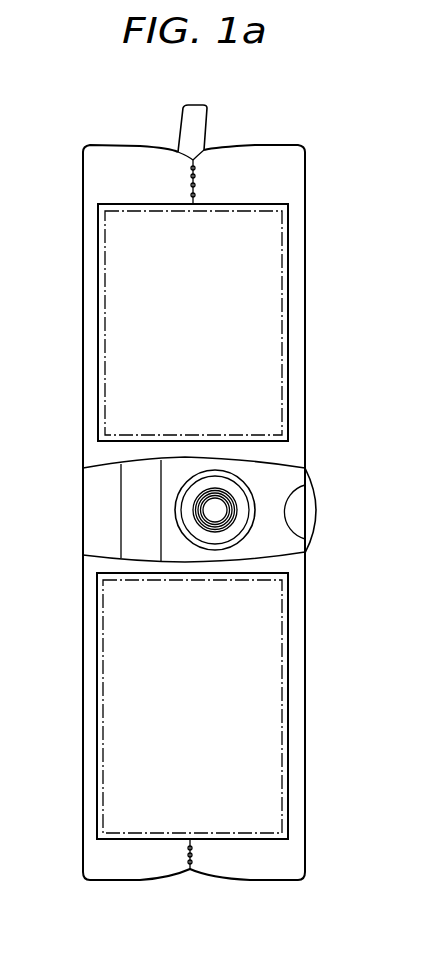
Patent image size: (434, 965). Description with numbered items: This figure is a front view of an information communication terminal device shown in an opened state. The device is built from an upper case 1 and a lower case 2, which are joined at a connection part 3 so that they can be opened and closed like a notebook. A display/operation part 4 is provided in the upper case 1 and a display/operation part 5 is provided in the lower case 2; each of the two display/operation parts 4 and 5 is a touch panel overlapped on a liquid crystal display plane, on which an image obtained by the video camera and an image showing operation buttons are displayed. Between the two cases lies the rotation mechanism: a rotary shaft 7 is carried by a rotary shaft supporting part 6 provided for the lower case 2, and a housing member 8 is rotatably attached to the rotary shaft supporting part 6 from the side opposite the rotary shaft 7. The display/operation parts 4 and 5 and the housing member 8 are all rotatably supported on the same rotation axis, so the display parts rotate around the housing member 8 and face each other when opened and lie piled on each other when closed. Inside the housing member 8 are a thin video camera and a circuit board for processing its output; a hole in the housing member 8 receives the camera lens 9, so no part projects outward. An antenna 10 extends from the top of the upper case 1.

The upper case 1 is at (290, 172).
The lower case 2 is at (278, 860).
The connection part 3 is at (322, 518).
The display/operation part 4 is at (250, 320).
The display/operation part 5 is at (243, 703).
The rotary shaft supporting part 6 is at (135, 527).
The rotary shaft 7 is at (93, 488).
The housing member 8 is at (285, 468).
The camera lens 9 is at (215, 508).
The antenna 10 is at (198, 128).